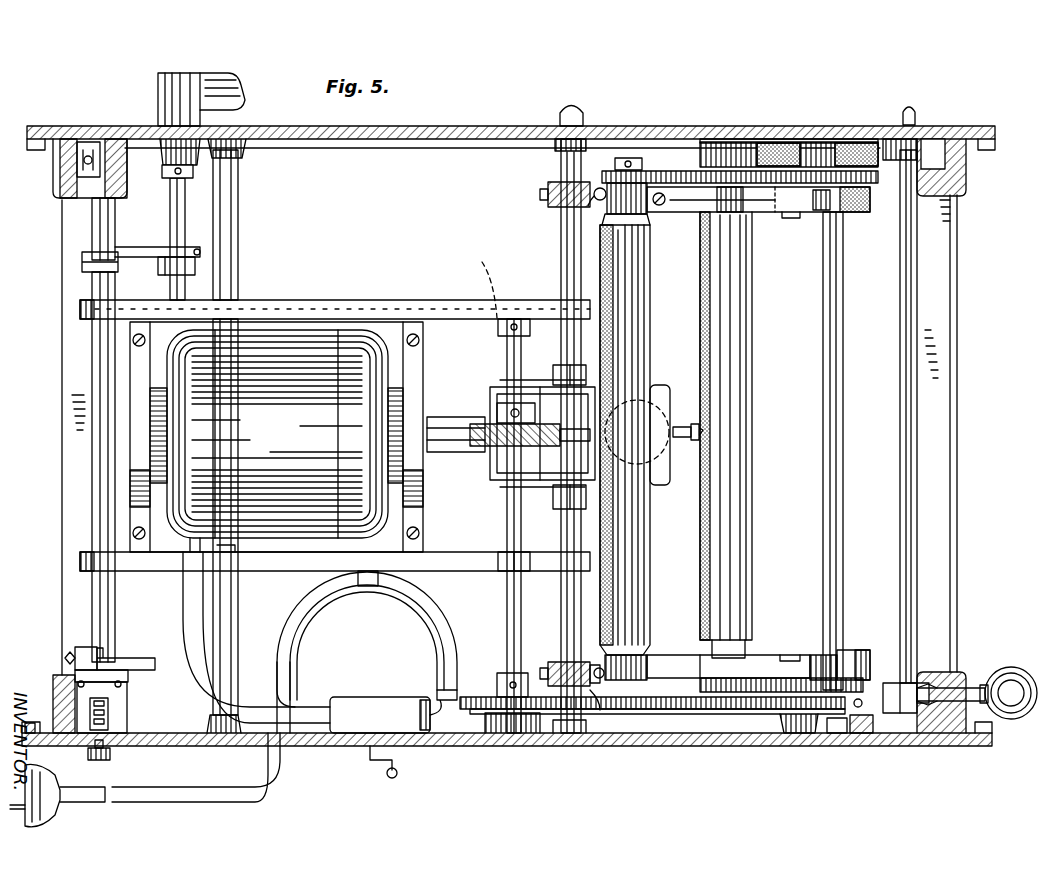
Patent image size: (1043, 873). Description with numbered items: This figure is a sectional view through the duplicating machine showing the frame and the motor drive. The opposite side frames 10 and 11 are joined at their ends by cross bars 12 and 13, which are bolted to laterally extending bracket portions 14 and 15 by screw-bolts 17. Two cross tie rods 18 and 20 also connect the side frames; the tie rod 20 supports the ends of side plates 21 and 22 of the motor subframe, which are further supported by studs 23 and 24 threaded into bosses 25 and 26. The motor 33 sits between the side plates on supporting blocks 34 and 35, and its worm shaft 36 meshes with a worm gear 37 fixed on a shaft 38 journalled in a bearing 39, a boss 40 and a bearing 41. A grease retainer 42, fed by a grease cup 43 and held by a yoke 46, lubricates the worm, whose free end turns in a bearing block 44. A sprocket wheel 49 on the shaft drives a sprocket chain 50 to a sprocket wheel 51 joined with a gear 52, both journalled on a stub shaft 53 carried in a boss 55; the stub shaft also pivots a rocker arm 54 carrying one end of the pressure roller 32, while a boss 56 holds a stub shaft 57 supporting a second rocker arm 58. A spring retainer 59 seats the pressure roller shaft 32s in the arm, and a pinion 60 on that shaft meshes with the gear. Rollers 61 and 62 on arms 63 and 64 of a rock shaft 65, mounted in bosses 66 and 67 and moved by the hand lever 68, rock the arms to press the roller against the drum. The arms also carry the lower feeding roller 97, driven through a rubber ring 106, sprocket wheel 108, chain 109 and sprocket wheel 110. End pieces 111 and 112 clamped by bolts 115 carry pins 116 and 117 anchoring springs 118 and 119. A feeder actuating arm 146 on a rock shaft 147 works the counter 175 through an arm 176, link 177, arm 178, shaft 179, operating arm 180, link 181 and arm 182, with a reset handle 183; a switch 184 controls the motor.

The side frame 10 is at (112, 125).
The side frame 11 is at (465, 748).
The cross bar 12 is at (948, 268).
The cross bar 13 is at (61, 340).
The bracket portion 14 is at (965, 190).
The bracket portion 15 is at (55, 180).
The screw-bolt 17 is at (88, 155).
The cross tie rod 18 is at (918, 343).
The cross tie rod 20 is at (560, 268).
The side plate 21 is at (484, 308).
The side plate 22 is at (466, 572).
The stud 23 is at (238, 248).
The stud 24 is at (236, 612).
The boss 25 is at (244, 150).
The boss 26 is at (210, 718).
The pressure roller 32 is at (745, 535).
The pressure roller shaft 32s is at (692, 240).
The motor 33 is at (276, 441).
The supporting block 34 is at (423, 345).
The supporting block 35 is at (133, 529).
The worm shaft 36 is at (440, 418).
The worm gear 37 is at (490, 446).
The shaft 38 is at (507, 362).
The bearing 39 is at (490, 291).
The boss 40 is at (493, 730).
The bearing 41 is at (500, 555).
The grease retainer 42 is at (532, 390).
The grease cup 43 is at (655, 425).
The bearing block 44 is at (553, 508).
The yoke 46 is at (675, 450).
The sprocket wheel 49 is at (492, 690).
The sprocket chain 50 is at (668, 712).
The sprocket wheel 51 is at (758, 716).
The gear 52 is at (882, 683).
The stub shaft 53 is at (790, 655).
The rocker arm 54 is at (762, 665).
The boss 55 is at (805, 733).
The boss 56 is at (770, 140).
The stub shaft 57 is at (790, 220).
The rocker arm 58 is at (760, 205).
The spring retainer 59 is at (652, 210).
The pinion 60 is at (712, 660).
The roller 61 is at (822, 656).
The roller 62 is at (820, 210).
The arm 63 is at (852, 652).
The arm 64 is at (855, 212).
The rock shaft 65 is at (843, 543).
The boss 66 is at (830, 142).
The boss 67 is at (842, 733).
The hand lever 68 is at (975, 688).
The lower copy sheet feeding roller 97 is at (648, 332).
The resilient rubber ring 106 is at (760, 142).
The sprocket wheel 108 is at (725, 142).
The chain 109 is at (665, 170).
The sprocket wheel 110 is at (583, 120).
The end piece 111 is at (600, 185).
The end piece 112 is at (580, 690).
The bolt 115 is at (540, 196).
The pin 116 is at (598, 205).
The pin 117 is at (598, 665).
The spring 118 is at (598, 201).
The spring 119 is at (600, 680).
The sheet feeder actuating arm 146 is at (158, 100).
The rock shaft 147 is at (171, 202).
The counting device 175 is at (80, 738).
The arm 176 is at (162, 276).
The link 177 is at (160, 250).
The arm 178 is at (82, 260).
The shaft 179 is at (92, 410).
The operating arm 180 is at (130, 680).
The link 181 is at (160, 664).
The arm 182 is at (125, 662).
The reset handle 183 is at (110, 752).
The switch 184 is at (400, 735).